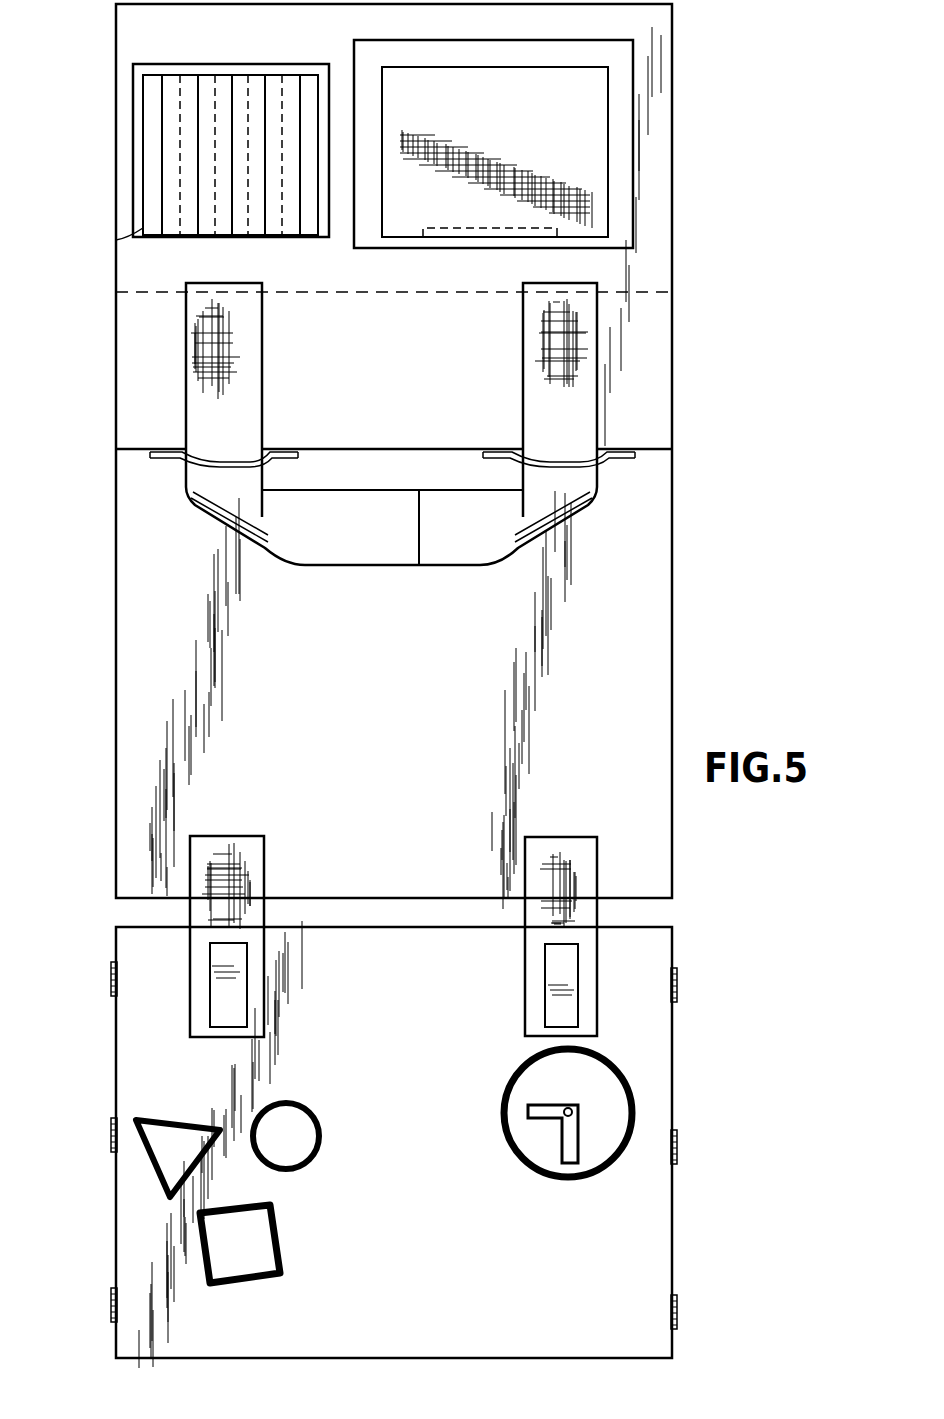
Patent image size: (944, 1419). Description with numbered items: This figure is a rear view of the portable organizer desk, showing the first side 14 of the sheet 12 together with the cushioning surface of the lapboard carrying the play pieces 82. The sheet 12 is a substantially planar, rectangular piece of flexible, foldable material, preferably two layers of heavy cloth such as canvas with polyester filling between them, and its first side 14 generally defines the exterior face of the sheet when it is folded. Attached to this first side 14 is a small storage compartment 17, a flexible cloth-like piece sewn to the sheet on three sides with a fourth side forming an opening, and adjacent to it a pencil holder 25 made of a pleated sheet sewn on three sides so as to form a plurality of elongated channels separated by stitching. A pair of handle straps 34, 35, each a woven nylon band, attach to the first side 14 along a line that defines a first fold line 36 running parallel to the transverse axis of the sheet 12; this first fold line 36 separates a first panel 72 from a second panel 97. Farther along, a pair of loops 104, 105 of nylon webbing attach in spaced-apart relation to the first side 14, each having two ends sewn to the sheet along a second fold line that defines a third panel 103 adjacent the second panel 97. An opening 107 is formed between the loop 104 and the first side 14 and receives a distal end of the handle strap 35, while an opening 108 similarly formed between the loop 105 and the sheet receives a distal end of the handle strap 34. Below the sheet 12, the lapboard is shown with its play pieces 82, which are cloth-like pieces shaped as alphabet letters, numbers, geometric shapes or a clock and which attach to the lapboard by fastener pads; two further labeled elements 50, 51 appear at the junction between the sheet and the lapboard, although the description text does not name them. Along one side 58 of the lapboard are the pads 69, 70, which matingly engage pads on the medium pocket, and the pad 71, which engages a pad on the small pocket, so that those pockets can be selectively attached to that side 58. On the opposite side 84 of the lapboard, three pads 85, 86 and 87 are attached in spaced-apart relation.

The sheet 12 is at (116, 42).
The first side 14 is at (116, 97).
The first panel 72 is at (116, 188).
The pencil holder 25 is at (140, 232).
The small storage compartment 17 is at (627, 215).
The first fold line 36 is at (652, 292).
The handle strap 35 is at (198, 368).
The handle strap 34 is at (525, 362).
The second panel 97 is at (132, 378).
The opening 107 is at (165, 439).
The opening 108 is at (613, 439).
The loop 104 is at (170, 462).
The loop 105 is at (612, 462).
The third panel 103 is at (132, 770).
The left leg 51 is at (250, 856).
The right leg 50 is at (580, 857).
The side 58 is at (116, 1236).
The play pieces 82 is at (388, 990).
The pad 71 is at (111, 978).
The pad 70 is at (111, 1135).
The pad 69 is at (111, 1305).
The pad 85 is at (677, 988).
The pad 86 is at (677, 1150).
The side 84 is at (672, 1258).
The pad 87 is at (677, 1312).